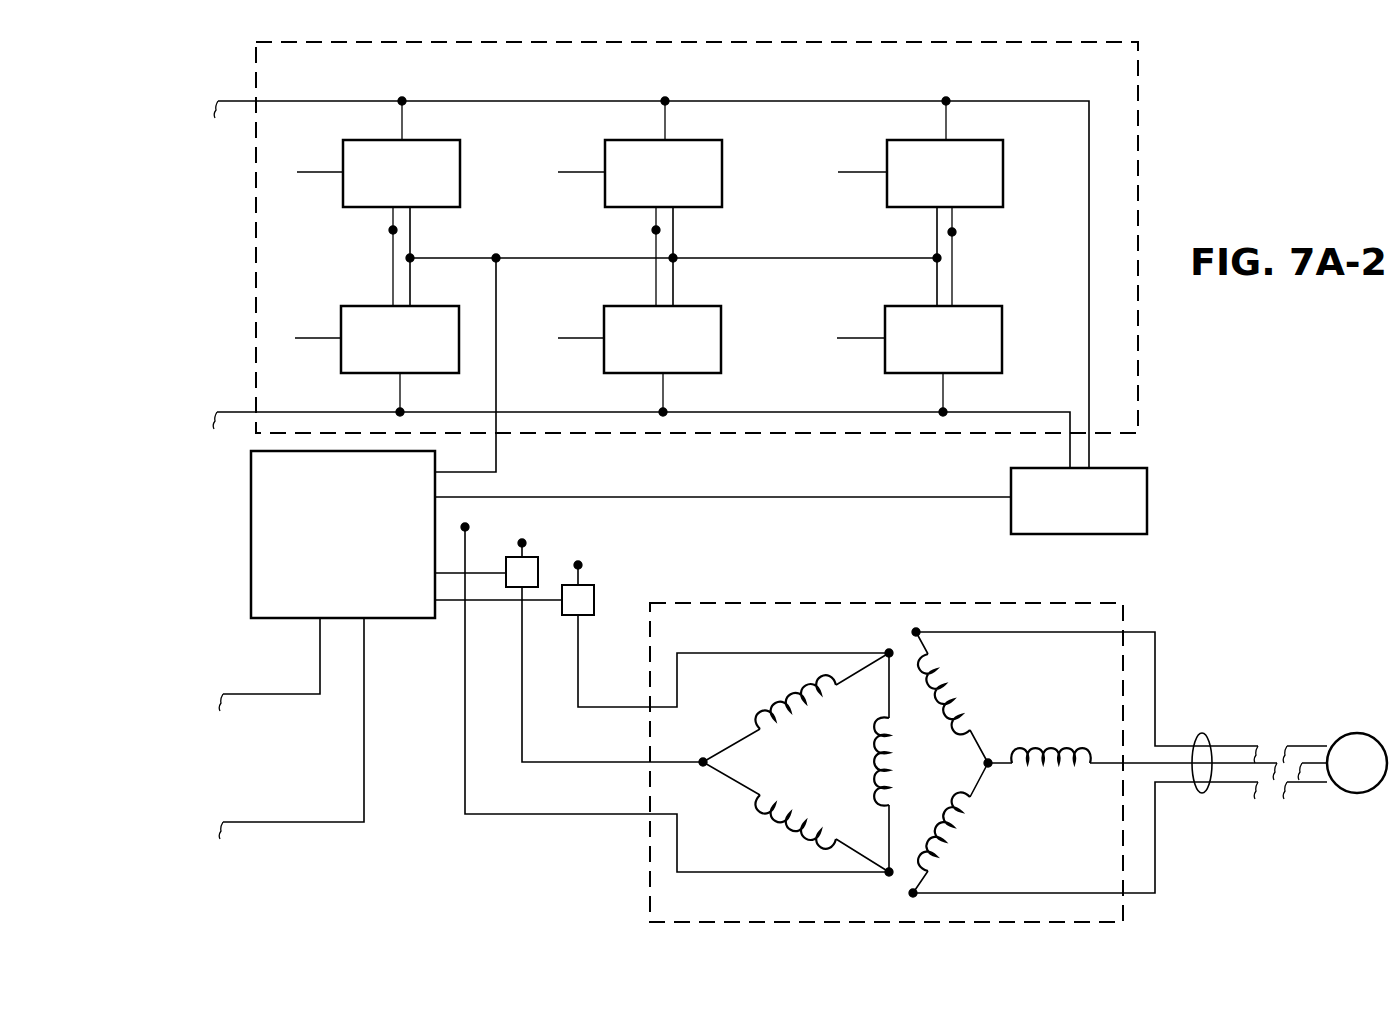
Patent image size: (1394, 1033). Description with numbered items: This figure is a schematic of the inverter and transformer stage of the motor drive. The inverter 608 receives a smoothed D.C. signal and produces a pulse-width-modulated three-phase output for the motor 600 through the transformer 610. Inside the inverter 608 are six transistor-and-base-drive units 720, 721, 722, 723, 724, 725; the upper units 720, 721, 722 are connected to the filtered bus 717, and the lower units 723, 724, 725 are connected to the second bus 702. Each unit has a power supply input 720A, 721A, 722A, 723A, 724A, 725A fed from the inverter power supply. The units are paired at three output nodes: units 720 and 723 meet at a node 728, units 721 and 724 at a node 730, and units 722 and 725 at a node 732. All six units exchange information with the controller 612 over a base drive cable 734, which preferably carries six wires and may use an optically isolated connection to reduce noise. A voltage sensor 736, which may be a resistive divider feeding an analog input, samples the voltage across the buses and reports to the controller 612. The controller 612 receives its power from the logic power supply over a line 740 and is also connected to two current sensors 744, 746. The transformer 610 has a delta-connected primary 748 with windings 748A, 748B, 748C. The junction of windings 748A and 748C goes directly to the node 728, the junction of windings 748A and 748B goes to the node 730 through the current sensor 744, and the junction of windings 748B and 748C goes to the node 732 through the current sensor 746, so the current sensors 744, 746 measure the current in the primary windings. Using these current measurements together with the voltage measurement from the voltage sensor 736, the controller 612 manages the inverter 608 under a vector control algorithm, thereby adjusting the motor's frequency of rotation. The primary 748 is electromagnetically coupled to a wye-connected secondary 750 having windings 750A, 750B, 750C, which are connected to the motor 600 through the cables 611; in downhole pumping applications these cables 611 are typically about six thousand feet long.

The inverter 608 is at (905, 433).
The filtered bus 717 is at (240, 101).
The second bus 702 is at (236, 412).
The transistor-and-base-drive unit 720 is at (445, 140).
The transistor-and-base-drive unit 721 is at (708, 140).
The transistor-and-base-drive unit 722 is at (988, 140).
The transistor-and-base-drive unit 723 is at (367, 373).
The transistor-and-base-drive unit 724 is at (703, 373).
The transistor-and-base-drive unit 725 is at (908, 373).
The power supply input 720A is at (318, 150).
The power supply input 721A is at (572, 172).
The power supply input 722A is at (852, 172).
The power supply input 723A is at (318, 316).
The power supply input 724A is at (572, 338).
The power supply input 725A is at (852, 338).
The node 728 is at (393, 230).
The node 730 is at (656, 230).
The node 732 is at (952, 232).
The base drive cable 734 is at (845, 258).
The controller 612 is at (251, 530).
The line 740 is at (242, 694).
The current sensor 744 is at (515, 587).
The current sensor 746 is at (594, 600).
The voltage sensor 736 is at (1082, 534).
The transformer 610 is at (1110, 603).
The primary 748 is at (798, 642).
The winding 748A is at (812, 838).
The winding 748B is at (812, 697).
The winding 748C is at (875, 760).
The secondary 750 is at (946, 627).
The winding 750A is at (950, 858).
The winding 750B is at (958, 660).
The winding 750C is at (1063, 755).
The cables 611 is at (1202, 733).
The motor 600 is at (1352, 733).